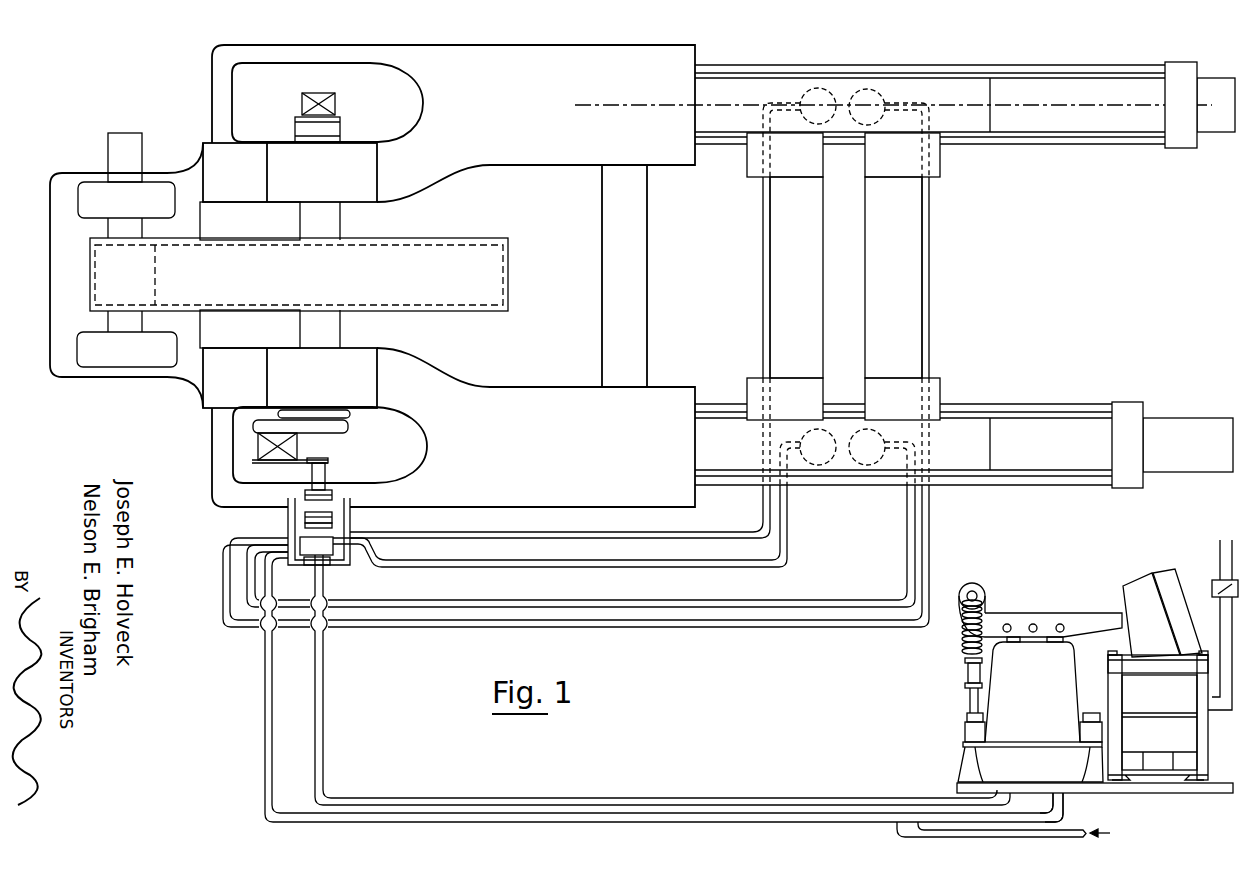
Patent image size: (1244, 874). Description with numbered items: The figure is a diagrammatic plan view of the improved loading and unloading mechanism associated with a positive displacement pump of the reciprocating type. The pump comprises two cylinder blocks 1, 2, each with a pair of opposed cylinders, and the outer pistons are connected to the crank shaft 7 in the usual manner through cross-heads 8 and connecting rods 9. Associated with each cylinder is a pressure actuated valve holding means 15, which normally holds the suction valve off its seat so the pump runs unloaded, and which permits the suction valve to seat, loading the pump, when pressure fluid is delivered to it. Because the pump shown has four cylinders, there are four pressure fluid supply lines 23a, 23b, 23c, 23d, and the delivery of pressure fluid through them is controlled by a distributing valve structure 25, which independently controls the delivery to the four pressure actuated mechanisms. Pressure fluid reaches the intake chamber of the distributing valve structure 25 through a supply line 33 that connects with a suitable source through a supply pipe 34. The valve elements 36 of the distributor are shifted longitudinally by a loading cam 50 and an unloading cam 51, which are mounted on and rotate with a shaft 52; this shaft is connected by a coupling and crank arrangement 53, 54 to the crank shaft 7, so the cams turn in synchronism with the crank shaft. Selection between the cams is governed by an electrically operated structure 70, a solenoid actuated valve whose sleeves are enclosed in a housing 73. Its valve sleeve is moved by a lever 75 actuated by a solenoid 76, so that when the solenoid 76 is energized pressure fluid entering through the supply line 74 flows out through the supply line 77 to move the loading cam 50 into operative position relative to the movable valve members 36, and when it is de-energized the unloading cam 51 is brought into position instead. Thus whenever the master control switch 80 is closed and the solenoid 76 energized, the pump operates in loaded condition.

The cylinder block 1 is at (745, 90).
The cylinder block 2 is at (575, 105).
The crank shaft 7 is at (323, 223).
The cross-head 8 is at (1177, 135).
The connecting rod 9 is at (1048, 72).
The pressure actuated valve holding means 15 is at (828, 90).
The pressure fluid supply line 23a is at (768, 290).
The pressure fluid supply line 23b is at (926, 300).
The pressure fluid supply line 23c is at (792, 562).
The pressure fluid supply line 23d is at (915, 551).
The distributing valve structure 25 is at (320, 557).
The supply line 33 is at (263, 708).
The supply pipe 34 is at (913, 840).
The valve element 36 is at (380, 537).
The loading cam 50 is at (332, 525).
The unloading cam 51 is at (310, 565).
The shaft 52 is at (327, 508).
The coupling 53 is at (332, 488).
The crank arrangement 54 is at (308, 460).
The electrically operated structure 70 is at (1043, 653).
The housing 73 is at (1013, 693).
The supply line 74 is at (1063, 805).
The lever 75 is at (1080, 617).
The solenoid 76 is at (1185, 735).
The supply line 77 is at (455, 803).
The master control switch 80 is at (1213, 583).